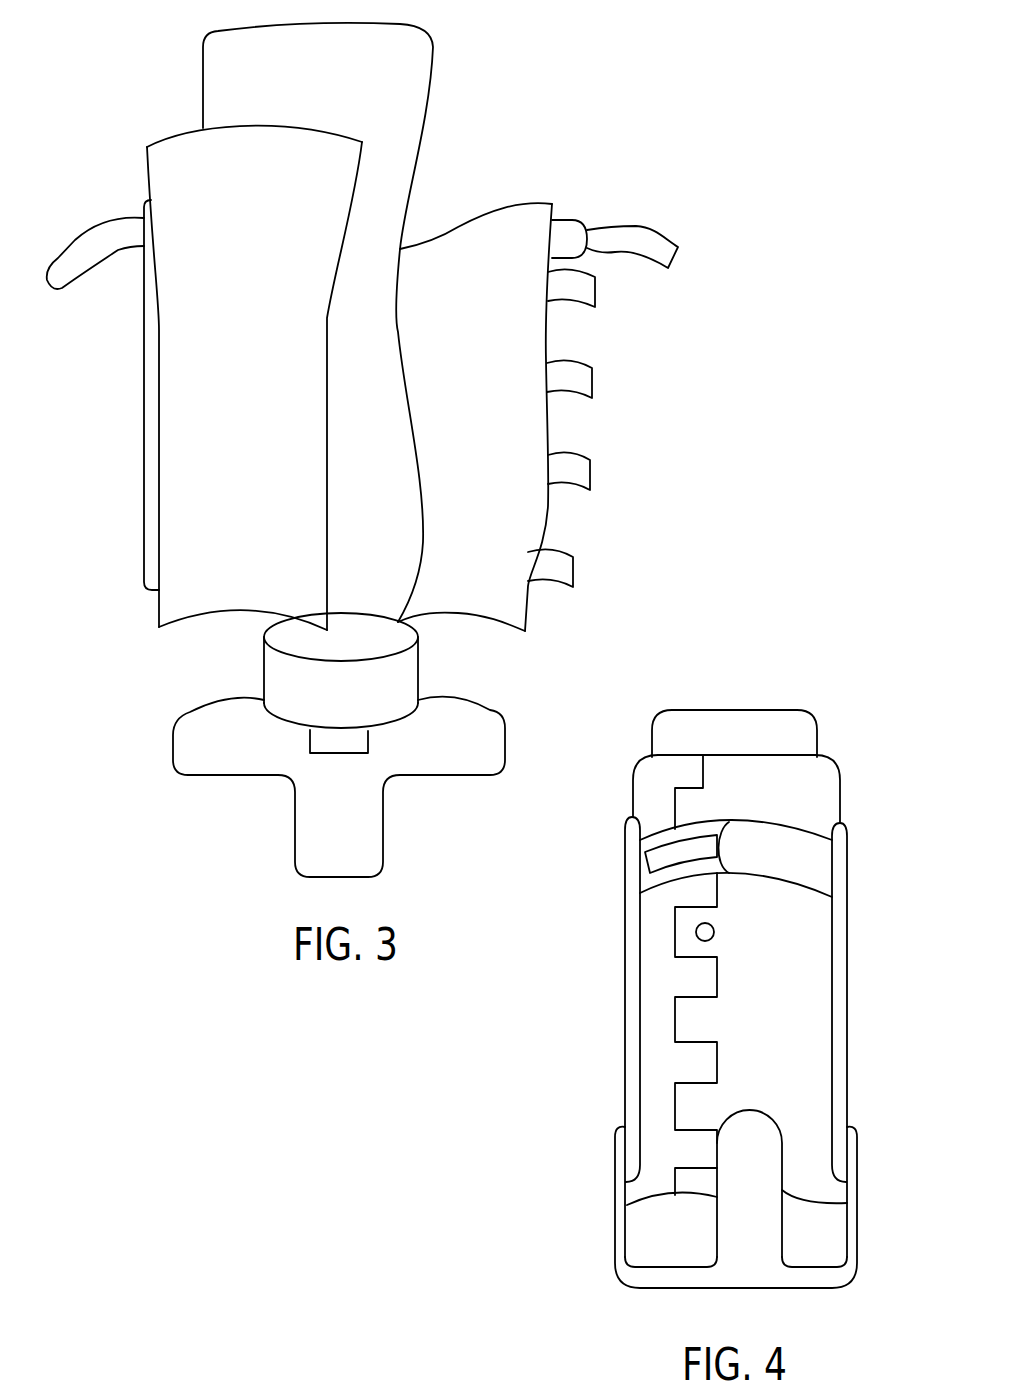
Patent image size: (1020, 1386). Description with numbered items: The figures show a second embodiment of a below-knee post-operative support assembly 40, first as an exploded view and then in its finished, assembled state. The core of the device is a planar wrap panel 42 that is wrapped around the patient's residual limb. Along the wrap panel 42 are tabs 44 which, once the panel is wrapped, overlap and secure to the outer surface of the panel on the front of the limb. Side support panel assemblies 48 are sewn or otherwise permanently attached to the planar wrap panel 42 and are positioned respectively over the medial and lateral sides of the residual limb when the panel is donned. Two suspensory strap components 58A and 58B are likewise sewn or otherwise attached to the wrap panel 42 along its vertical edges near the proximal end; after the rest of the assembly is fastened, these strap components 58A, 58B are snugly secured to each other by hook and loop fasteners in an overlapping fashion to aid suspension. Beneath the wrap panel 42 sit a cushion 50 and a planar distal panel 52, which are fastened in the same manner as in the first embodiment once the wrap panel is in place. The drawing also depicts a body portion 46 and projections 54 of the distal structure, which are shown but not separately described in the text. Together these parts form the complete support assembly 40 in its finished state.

In FIG. 3, the post-operative support assembly 40 is at (72, 425).
In FIG. 3, the planar wrap panel 42 is at (283, 150).
In FIG. 4, the planar wrap panel 42 is at (645, 792).
In FIG. 3, the tabs 44 is at (563, 230).
In FIG. 3, the rear body 46 is at (383, 537).
In FIG. 4, the rear body 46 is at (705, 728).
In FIG. 3, the side support panel assemblies 48 is at (145, 333).
In FIG. 4, the side support panel assemblies 48 is at (840, 937).
In FIG. 3, the cushion 50 is at (285, 683).
In FIG. 4, the cushion 50 is at (657, 1245).
In FIG. 3, the planar distal panel 52 is at (298, 773).
In FIG. 4, the planar distal panel 52 is at (765, 1272).
In FIG. 3, the base projections 54 is at (220, 743).
In FIG. 4, the base projections 54 is at (745, 1123).
In FIG. 3, the suspensory strap component 58A is at (95, 235).
In FIG. 4, the suspensory strap component 58A is at (648, 883).
In FIG. 3, the suspensory strap component 58B is at (643, 240).
In FIG. 4, the suspensory strap component 58B is at (785, 848).